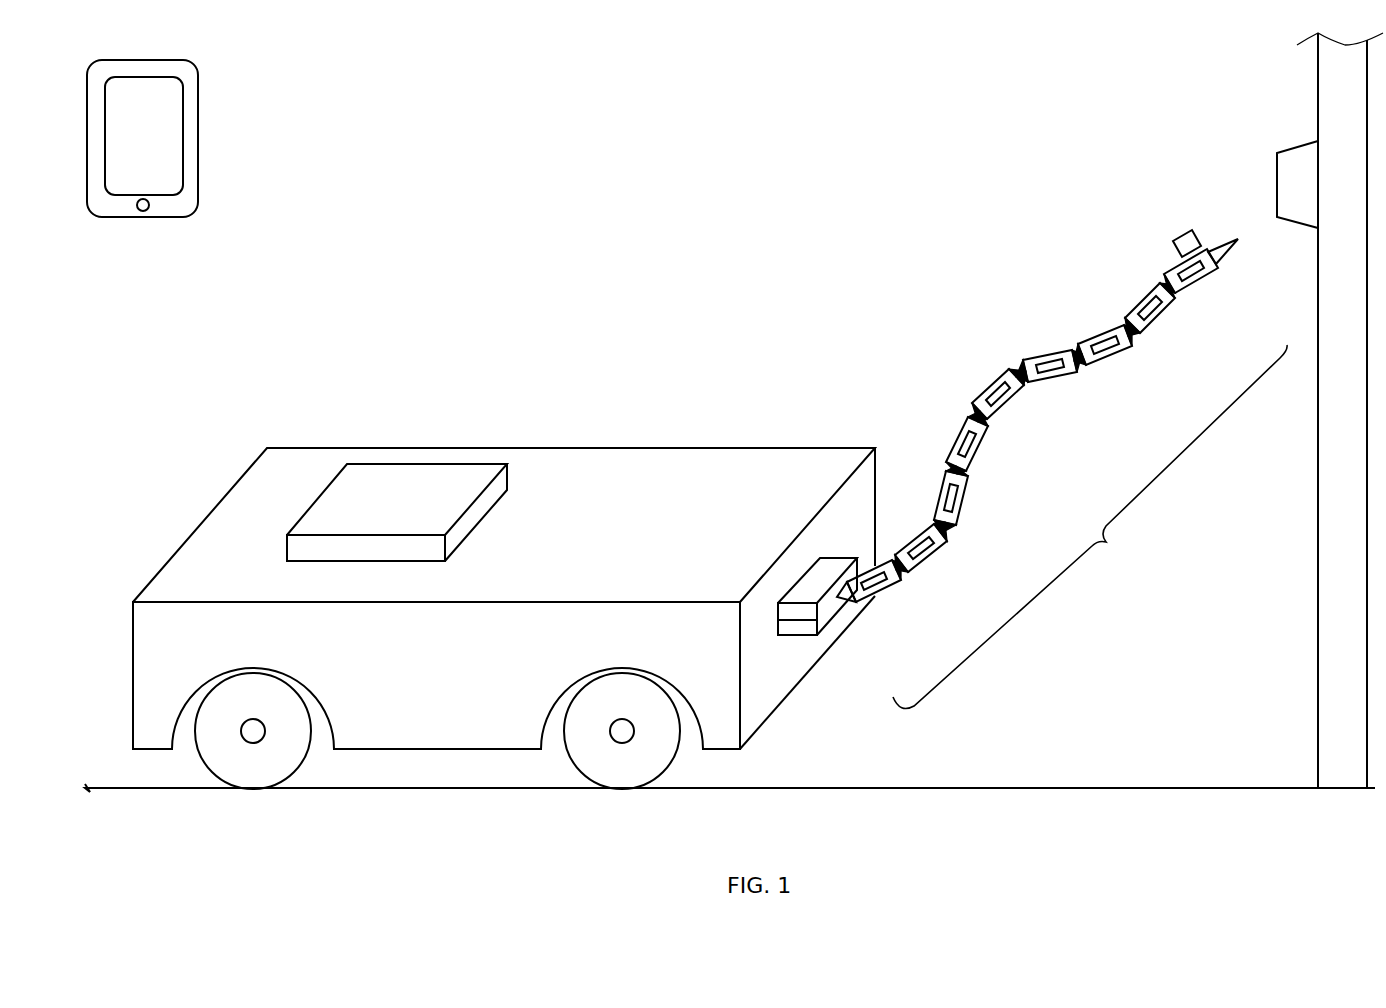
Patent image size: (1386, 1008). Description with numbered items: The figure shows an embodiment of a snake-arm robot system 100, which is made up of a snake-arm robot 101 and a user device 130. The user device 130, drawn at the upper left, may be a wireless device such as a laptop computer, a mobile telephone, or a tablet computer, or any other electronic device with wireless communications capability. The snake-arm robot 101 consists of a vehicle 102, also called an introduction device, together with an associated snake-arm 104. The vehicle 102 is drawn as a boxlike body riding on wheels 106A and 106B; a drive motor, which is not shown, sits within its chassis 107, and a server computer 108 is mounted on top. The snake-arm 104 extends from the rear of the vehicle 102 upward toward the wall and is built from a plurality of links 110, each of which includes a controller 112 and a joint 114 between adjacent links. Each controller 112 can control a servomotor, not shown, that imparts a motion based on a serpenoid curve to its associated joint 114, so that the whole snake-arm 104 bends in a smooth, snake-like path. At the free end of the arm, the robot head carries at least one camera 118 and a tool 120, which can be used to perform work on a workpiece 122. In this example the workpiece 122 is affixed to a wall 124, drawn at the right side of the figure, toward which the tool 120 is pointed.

The snake-arm robot system 100 is at (656, 178).
The snake-arm robot 101 is at (320, 352).
The vehicle 102 is at (504, 604).
The snake-arm 104 is at (1108, 540).
The wheel 106A is at (212, 783).
The wheel 106B is at (580, 783).
The chassis 107 is at (206, 504).
The server computer 108 is at (418, 465).
The links 110 is at (1140, 300).
The controller 112 is at (1100, 340).
The joint 114 is at (1166, 286).
The camera 118 is at (1178, 237).
The tool 120 is at (1228, 240).
The workpiece 122 is at (1294, 147).
The wall 124 is at (1316, 68).
The user device 130 is at (199, 135).